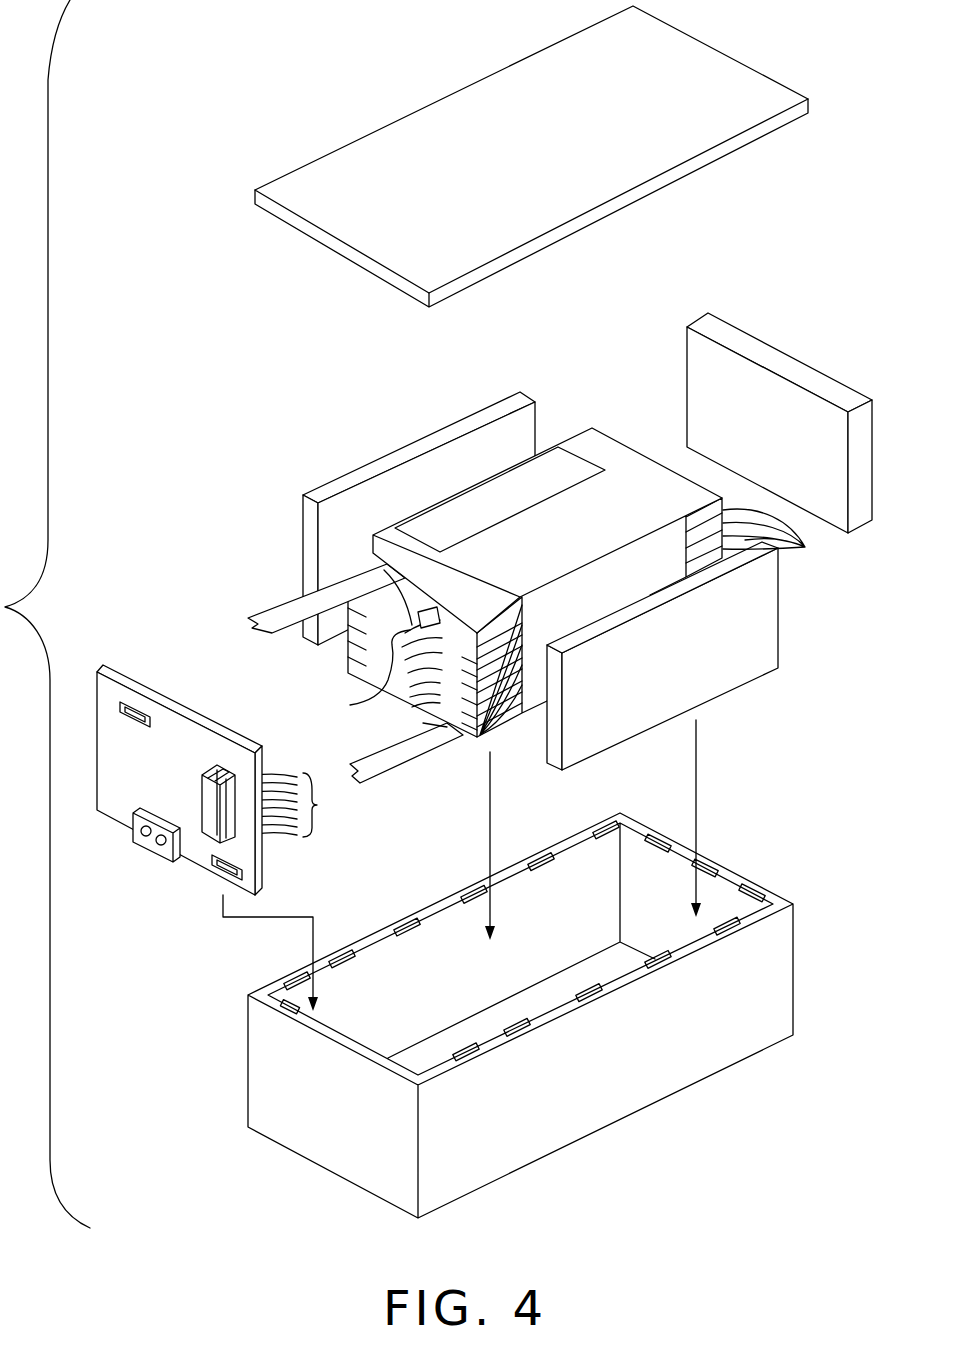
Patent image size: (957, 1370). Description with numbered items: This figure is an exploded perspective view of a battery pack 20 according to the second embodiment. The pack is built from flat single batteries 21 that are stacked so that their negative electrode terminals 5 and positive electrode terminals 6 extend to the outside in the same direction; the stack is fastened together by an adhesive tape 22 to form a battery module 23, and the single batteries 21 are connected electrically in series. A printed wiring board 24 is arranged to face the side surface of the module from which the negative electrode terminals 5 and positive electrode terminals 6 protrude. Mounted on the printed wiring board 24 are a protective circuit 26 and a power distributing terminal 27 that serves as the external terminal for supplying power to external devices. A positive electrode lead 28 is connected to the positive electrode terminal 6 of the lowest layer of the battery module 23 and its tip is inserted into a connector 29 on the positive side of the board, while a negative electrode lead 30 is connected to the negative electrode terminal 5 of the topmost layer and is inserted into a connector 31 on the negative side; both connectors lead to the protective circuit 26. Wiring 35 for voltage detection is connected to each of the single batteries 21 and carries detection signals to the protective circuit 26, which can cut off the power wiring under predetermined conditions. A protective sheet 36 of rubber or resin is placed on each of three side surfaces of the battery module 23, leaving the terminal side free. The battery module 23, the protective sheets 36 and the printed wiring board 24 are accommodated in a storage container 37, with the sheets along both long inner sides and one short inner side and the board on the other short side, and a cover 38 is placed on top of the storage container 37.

The battery pack 20 is at (170, 316).
The cover 38 is at (742, 88).
The protective sheet 36 is at (376, 470).
The adhesive tape 22 is at (620, 518).
The battery module 23 is at (469, 492).
The negative electrode terminal 5 is at (384, 570).
The positive electrode terminal 6 is at (445, 628).
The negative electrode lead 30 is at (262, 608).
The positive electrode lead 28 is at (395, 767).
The wiring for voltage detection 35 is at (319, 740).
The single battery 21 is at (783, 535).
The storage container 37 is at (790, 972).
The printed wiring board 24 is at (134, 672).
The connector on the negative electrode side 31 is at (152, 712).
The connector on the positive electrode side 29 is at (243, 873).
The power distributing terminal 27 is at (160, 848).
The protective circuit 26 is at (219, 766).